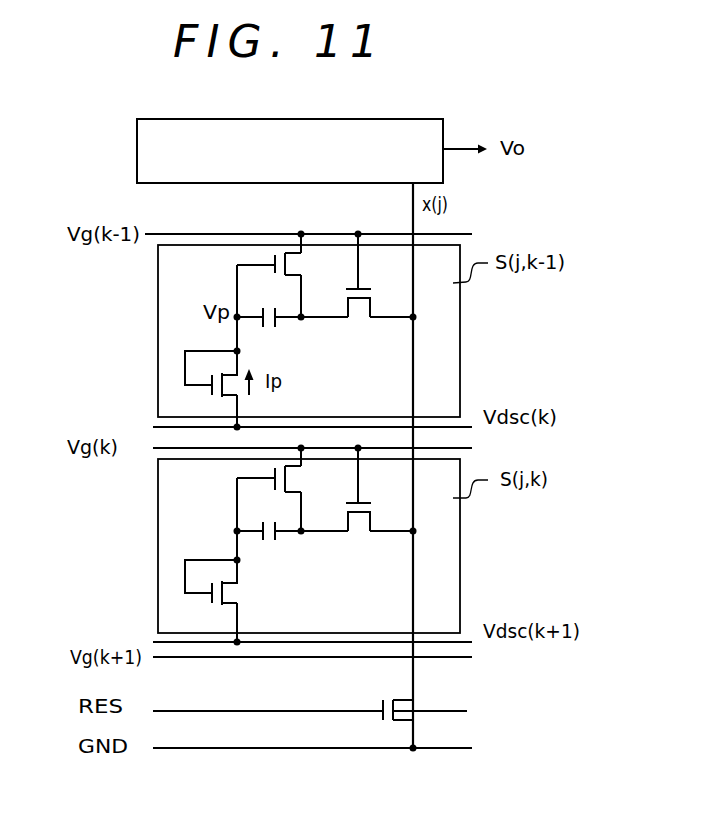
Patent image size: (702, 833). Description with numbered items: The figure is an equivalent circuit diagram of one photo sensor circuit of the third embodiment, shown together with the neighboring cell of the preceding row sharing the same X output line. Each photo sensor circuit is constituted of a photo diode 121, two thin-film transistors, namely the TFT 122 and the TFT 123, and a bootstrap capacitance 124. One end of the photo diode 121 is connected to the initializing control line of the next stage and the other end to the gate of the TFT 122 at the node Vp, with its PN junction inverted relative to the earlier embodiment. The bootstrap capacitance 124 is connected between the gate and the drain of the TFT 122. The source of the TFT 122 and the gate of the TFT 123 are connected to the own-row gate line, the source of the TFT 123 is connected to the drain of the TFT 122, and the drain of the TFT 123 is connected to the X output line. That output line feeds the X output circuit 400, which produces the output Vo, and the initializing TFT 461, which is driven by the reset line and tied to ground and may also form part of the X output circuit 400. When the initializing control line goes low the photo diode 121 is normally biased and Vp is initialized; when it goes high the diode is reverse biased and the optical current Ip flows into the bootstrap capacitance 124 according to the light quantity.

The X output circuit 400 is at (352, 122).
The photo diode 121 is at (211, 384).
The TFT 122 is at (305, 265).
The TFT 123 is at (360, 310).
The bootstrap capacitance 124 is at (262, 312).
The initializing TFT 461 is at (394, 700).